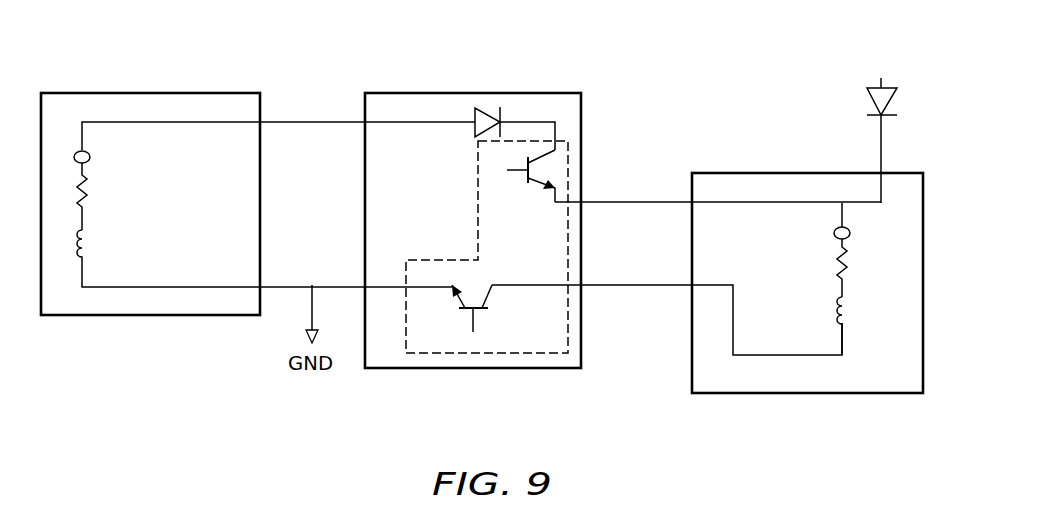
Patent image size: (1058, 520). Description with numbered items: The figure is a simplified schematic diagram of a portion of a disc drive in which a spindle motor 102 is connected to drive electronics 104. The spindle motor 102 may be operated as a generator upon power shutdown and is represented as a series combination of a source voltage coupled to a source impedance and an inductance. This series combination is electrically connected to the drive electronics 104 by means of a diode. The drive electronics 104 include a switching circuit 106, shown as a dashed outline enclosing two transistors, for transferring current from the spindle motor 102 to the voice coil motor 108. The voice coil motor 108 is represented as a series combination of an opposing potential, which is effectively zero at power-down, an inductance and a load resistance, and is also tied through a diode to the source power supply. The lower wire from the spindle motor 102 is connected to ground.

The spindle motor 102 is at (130, 317).
The drive electronics 104 is at (475, 233).
The switching circuit 106 is at (545, 245).
The voice coil motor 108 is at (780, 395).